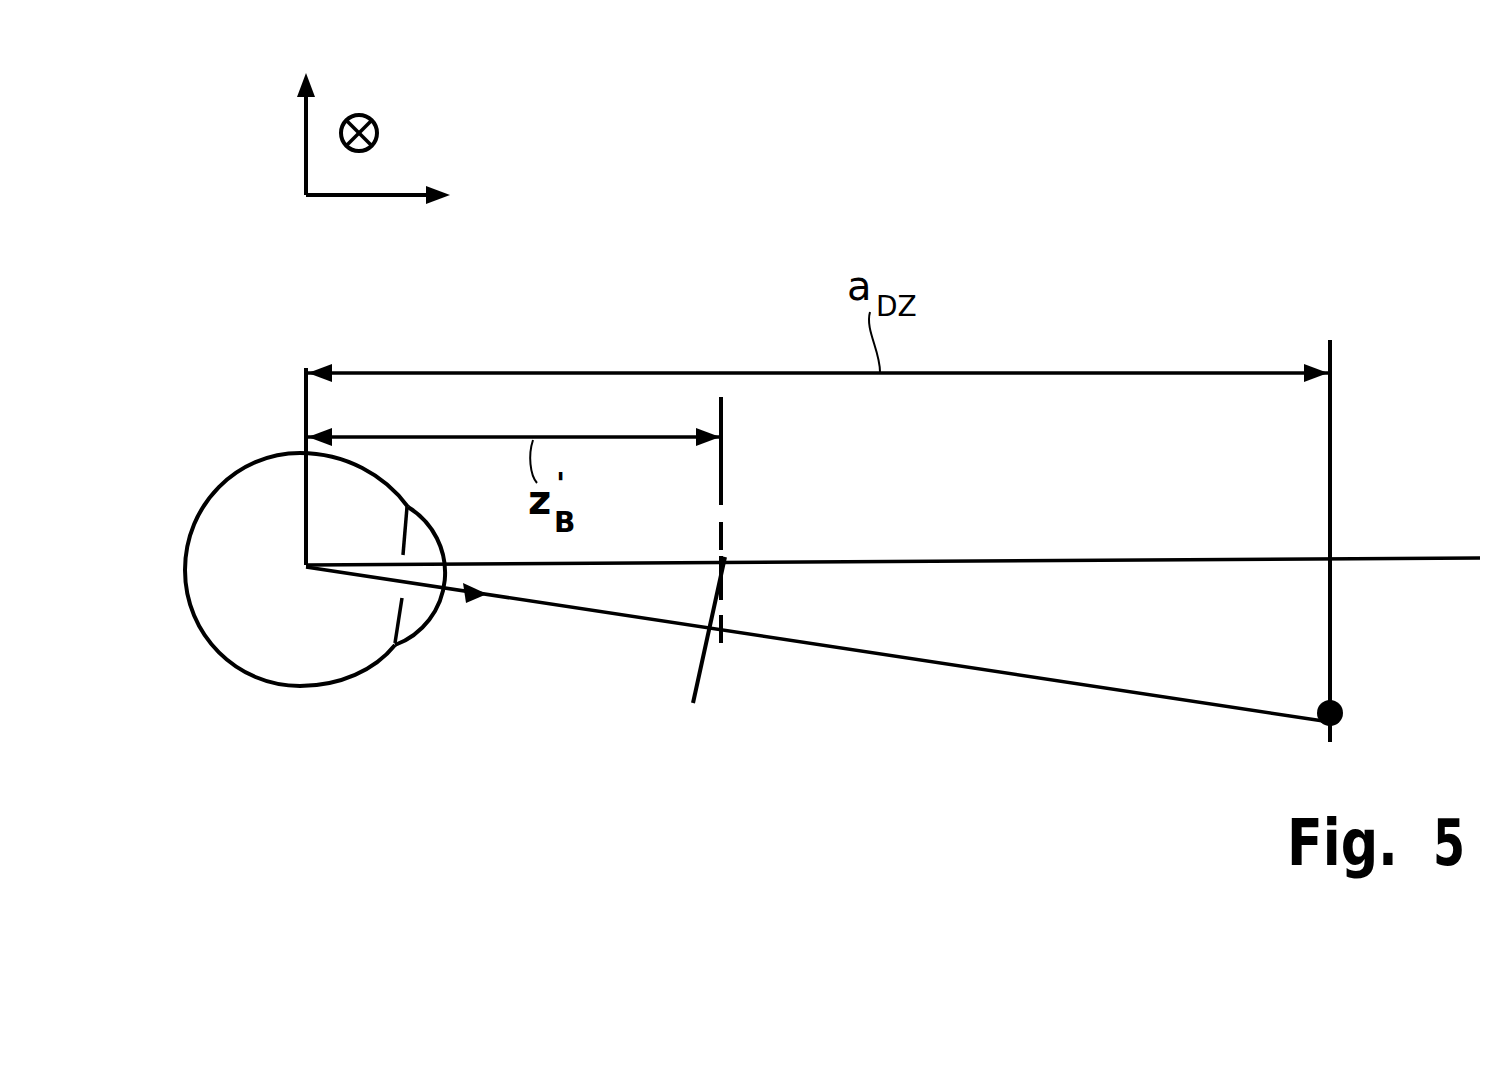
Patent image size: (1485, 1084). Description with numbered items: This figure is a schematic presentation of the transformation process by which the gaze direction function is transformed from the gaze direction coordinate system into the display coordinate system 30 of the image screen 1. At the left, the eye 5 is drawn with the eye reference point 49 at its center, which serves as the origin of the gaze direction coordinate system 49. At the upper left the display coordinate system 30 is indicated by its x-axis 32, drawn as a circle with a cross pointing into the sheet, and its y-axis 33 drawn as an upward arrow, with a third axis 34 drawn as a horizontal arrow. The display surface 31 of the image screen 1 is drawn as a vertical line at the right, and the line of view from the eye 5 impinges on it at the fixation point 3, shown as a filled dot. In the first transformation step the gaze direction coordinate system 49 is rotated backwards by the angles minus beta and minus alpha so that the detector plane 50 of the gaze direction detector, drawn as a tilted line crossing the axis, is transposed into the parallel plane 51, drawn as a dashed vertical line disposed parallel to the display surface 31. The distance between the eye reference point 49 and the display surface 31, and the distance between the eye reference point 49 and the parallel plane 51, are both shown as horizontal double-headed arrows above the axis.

The image screen 1 is at (1336, 405).
The fixation point 3 is at (1343, 713).
The eye 5 is at (247, 675).
The display coordinate system 30 is at (359, 148).
The display surface 31 is at (1332, 354).
The x_D-axis 32 is at (357, 114).
The y_D-axis 33 is at (305, 132).
The z axis 34 is at (365, 198).
The eye reference point 49 is at (306, 565).
The x_B-y_B-plane 50 is at (707, 657).
The x'_B-y'_B-plane 51 is at (723, 537).